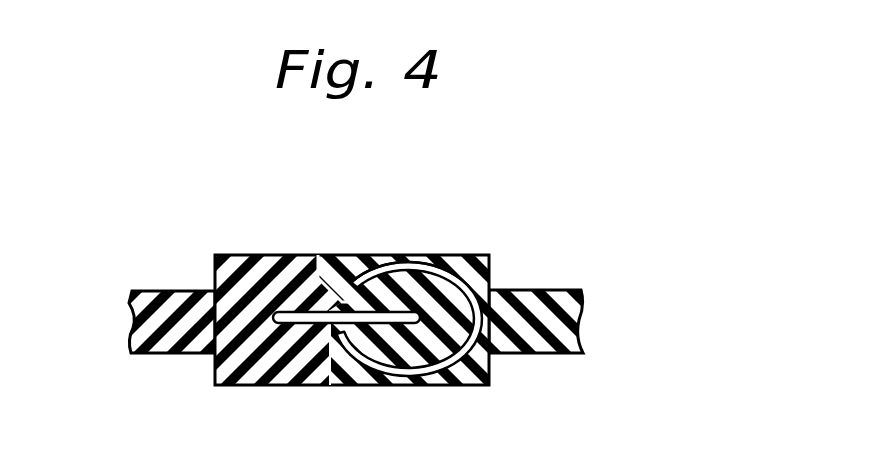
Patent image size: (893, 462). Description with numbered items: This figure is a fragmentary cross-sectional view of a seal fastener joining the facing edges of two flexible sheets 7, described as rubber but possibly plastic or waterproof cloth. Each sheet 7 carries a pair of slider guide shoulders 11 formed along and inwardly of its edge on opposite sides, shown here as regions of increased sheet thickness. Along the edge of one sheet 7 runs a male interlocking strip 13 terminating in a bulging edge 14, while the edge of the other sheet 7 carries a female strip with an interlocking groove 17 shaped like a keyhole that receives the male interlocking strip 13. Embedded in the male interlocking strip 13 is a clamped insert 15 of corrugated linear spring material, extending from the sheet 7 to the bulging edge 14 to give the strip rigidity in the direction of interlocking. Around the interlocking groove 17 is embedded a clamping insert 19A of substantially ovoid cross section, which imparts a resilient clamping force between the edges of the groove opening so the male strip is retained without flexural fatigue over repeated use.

The sheet 7 is at (130, 318).
The slider guide shoulder 11 is at (212, 279).
The male interlocking strip 13 is at (331, 345).
The bulging edge 14 is at (420, 345).
The clamped insert 15 is at (293, 335).
The interlocking groove 17 is at (450, 297).
The clamping insert 19A is at (422, 266).